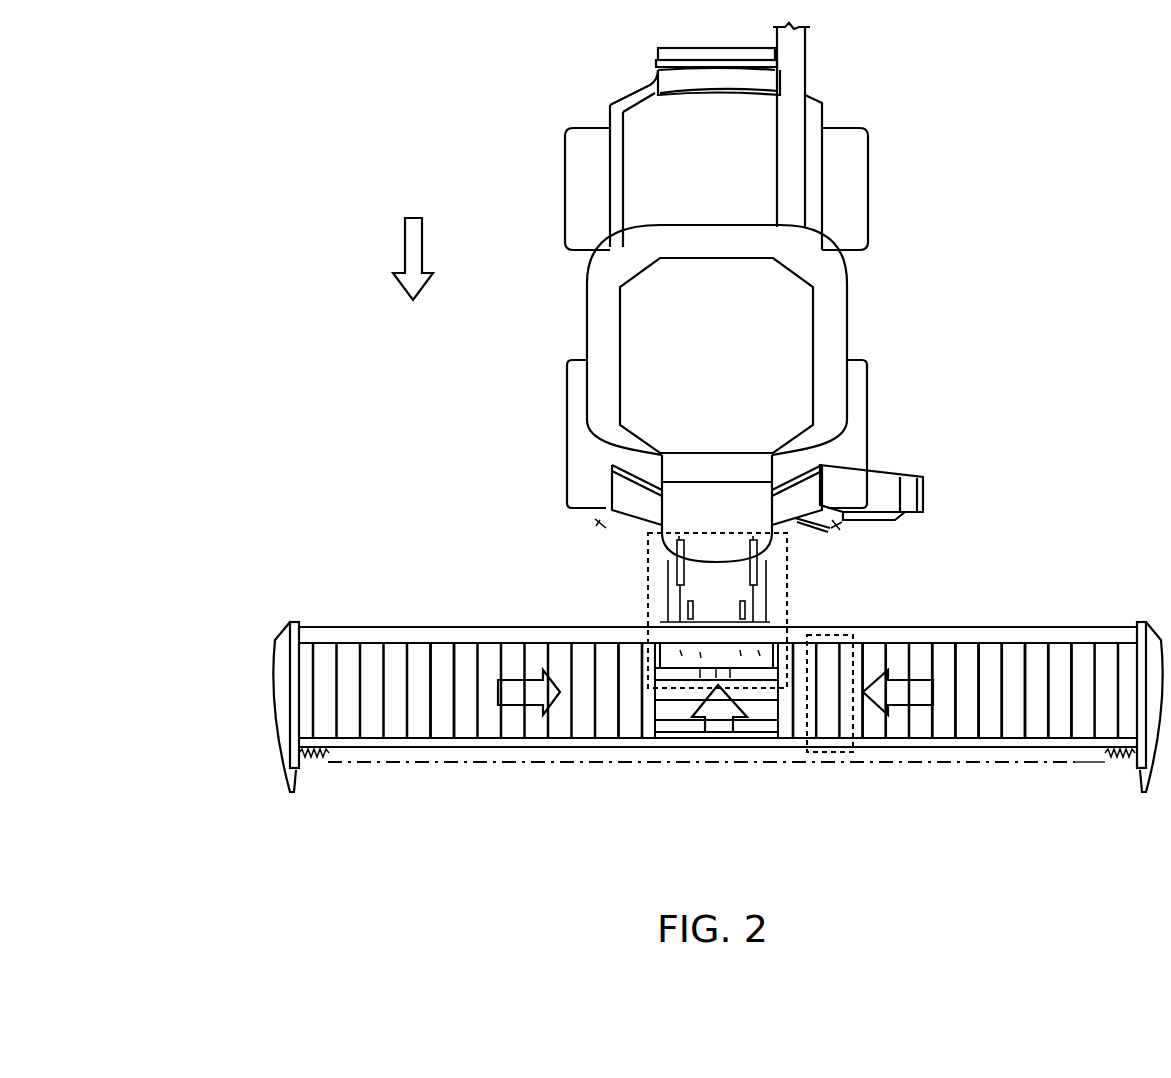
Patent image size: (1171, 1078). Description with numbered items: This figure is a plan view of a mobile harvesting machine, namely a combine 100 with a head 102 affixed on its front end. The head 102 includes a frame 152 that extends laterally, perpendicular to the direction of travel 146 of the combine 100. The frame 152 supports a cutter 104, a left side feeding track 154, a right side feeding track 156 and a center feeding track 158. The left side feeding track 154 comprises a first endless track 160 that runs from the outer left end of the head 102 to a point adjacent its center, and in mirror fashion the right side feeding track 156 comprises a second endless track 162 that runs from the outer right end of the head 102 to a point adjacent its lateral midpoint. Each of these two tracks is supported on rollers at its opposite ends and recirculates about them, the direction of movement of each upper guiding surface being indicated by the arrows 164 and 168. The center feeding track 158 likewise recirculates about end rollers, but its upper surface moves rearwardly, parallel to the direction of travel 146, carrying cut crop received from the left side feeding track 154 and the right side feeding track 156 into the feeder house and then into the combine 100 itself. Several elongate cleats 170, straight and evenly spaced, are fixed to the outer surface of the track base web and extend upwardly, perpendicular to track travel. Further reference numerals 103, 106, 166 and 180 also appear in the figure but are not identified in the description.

The combine 100 is at (940, 168).
The head 102 is at (676, 681).
The hitch assembly 103 is at (647, 572).
The cutter 104 is at (1080, 752).
The drive mechanism 106 is at (607, 644).
The direction of travel 146 is at (415, 265).
The frame 152 is at (1107, 641).
The left side feeding track 154 is at (443, 716).
The right side feeding track 156 is at (1060, 716).
The center feeding track 158 is at (765, 712).
The first endless track 160 is at (350, 652).
The second endless track 162 is at (1013, 657).
The arrow 164 is at (529, 692).
The second direction arrow 166 is at (898, 692).
The arrow 168 is at (719, 708).
The cleats 170 is at (986, 653).
The sensor 180 is at (836, 754).